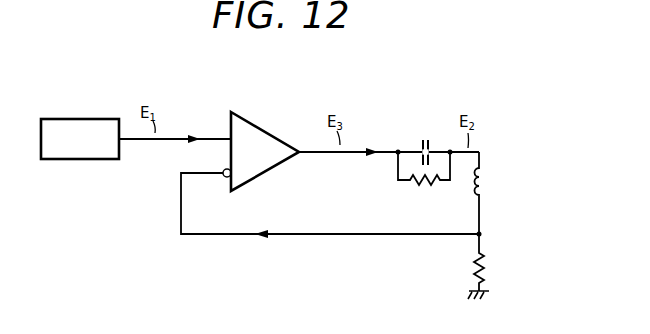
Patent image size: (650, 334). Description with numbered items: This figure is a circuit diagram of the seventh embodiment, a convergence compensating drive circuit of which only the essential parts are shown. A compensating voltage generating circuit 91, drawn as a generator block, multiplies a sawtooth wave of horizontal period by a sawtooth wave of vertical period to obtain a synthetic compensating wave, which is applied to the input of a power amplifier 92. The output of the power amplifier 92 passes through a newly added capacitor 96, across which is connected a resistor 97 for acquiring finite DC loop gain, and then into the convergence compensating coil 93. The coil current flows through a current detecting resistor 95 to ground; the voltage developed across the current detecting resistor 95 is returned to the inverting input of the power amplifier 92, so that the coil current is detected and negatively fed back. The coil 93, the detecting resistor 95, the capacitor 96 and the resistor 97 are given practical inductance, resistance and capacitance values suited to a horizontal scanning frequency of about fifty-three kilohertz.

The compensating voltage generating circuit 91 is at (79, 118).
The power amplifier 92 is at (264, 125).
The convergence compensating coil 93 is at (483, 178).
The current detecting resistor 95 is at (486, 263).
The capacitor 96 is at (430, 140).
The resistor 97 is at (410, 184).